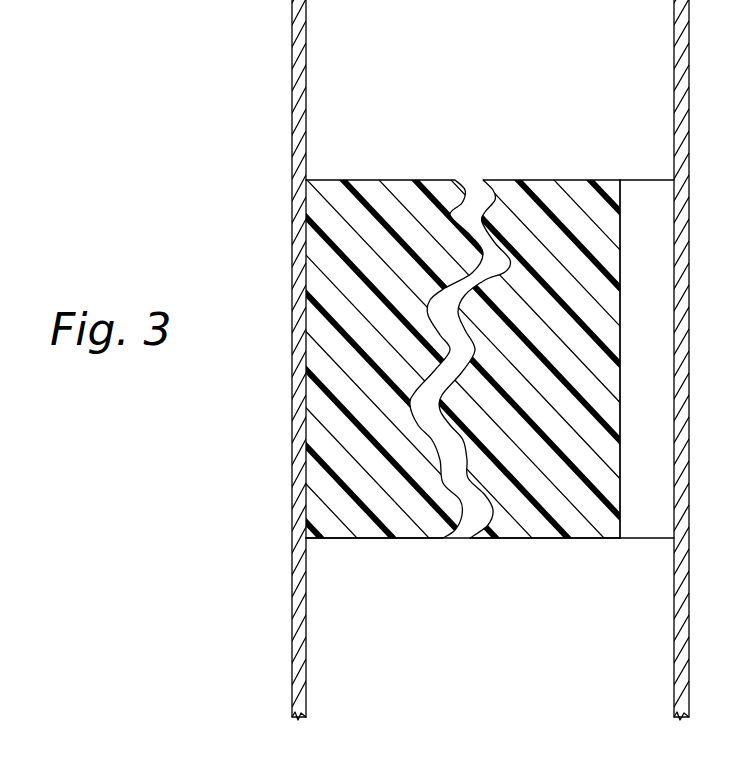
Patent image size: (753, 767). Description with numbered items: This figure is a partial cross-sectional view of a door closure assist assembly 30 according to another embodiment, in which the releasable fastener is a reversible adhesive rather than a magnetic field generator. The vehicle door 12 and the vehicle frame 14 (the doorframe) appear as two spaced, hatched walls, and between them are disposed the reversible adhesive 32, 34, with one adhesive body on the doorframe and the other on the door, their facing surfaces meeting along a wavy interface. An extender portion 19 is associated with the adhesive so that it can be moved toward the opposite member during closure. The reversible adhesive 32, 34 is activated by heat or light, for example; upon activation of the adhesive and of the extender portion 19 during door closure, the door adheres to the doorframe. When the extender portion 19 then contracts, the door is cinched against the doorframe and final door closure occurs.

The door closure assist assembly 30 is at (130, 115).
The vehicle door 12 is at (306, 65).
The vehicle frame 14 is at (674, 648).
The extender portion 19 is at (647, 538).
The reversible adhesive 32 is at (396, 180).
The reversible adhesive 34 is at (523, 180).